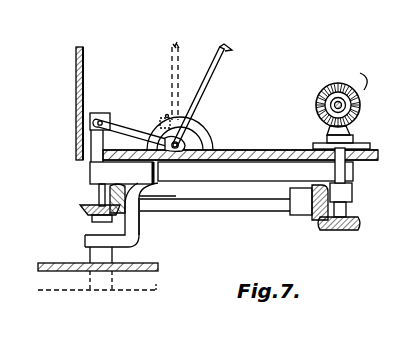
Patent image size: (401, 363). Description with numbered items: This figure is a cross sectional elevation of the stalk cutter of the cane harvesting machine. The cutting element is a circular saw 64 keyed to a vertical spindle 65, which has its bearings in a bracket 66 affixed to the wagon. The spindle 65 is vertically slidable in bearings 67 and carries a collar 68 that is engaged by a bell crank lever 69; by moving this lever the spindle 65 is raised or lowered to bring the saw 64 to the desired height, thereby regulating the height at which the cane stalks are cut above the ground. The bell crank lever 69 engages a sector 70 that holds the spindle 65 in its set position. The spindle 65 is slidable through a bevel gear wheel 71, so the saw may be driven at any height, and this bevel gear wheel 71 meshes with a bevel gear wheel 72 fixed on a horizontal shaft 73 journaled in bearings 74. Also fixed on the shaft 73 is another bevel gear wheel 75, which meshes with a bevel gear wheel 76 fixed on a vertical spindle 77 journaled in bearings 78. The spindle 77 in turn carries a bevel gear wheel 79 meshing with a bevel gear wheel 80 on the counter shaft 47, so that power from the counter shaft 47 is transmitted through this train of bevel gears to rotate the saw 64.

The counter shaft 47 is at (330, 86).
The circular saw 64 is at (66, 263).
The vertical spindle 65 is at (99, 194).
The bracket 66 is at (142, 239).
The bearings 67 is at (90, 176).
The collar 68 is at (103, 113).
The bell crank lever 69 is at (135, 122).
The sector 70 is at (207, 130).
The bevel gear wheel 71 is at (80, 210).
The bevel gear wheel 72 is at (128, 212).
The horizontal shaft 73 is at (238, 207).
The bearings 74 is at (138, 201).
The bevel gear wheel 75 is at (318, 224).
The bevel gear wheel 76 is at (346, 230).
The vertical spindle 77 is at (335, 172).
The bearings 78 is at (320, 142).
The bevel gear wheel 79 is at (327, 126).
The bevel gear wheel 80 is at (360, 73).